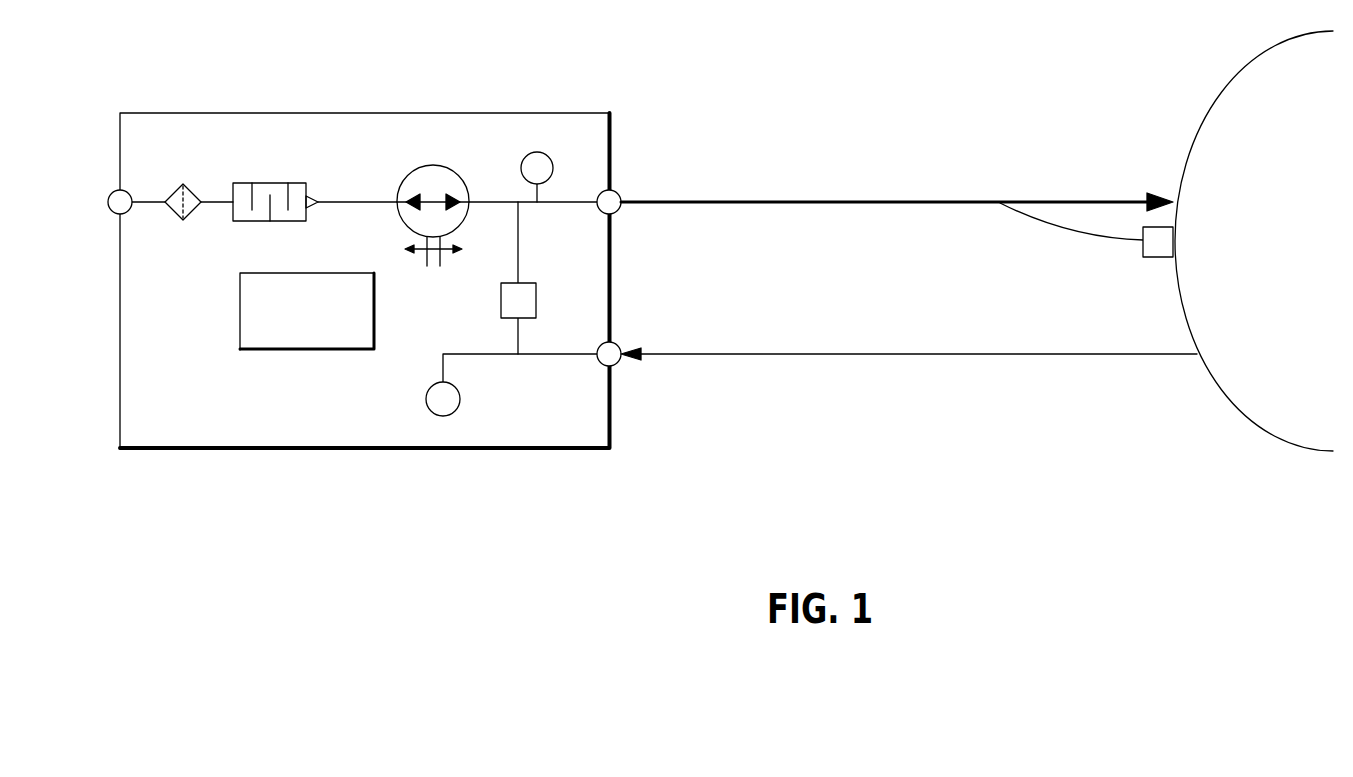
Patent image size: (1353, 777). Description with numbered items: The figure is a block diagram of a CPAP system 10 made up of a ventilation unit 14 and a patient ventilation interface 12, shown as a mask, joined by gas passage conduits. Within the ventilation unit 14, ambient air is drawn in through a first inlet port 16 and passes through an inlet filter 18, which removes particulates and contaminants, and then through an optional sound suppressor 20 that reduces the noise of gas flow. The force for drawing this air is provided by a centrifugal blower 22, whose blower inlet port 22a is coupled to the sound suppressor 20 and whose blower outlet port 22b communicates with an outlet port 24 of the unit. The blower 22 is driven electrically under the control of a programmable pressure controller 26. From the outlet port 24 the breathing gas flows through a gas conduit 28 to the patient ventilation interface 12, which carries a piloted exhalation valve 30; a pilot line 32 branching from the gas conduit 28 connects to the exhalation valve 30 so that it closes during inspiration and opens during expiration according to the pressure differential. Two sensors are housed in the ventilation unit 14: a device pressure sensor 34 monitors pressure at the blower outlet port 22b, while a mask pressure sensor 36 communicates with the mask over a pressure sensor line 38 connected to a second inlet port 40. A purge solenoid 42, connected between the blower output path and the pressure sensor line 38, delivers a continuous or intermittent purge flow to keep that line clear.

The CPAP system 10 is at (801, 491).
The patient ventilation interface 12 is at (1290, 270).
The ventilation unit 14 is at (381, 452).
The first inlet port 16 is at (112, 213).
The inlet filter 18 is at (183, 221).
The sound suppressor 20 is at (263, 222).
The blower 22 is at (405, 182).
The blower inlet port 22a is at (399, 205).
The blower outlet port 22b is at (500, 178).
The outlet port 24 is at (619, 193).
The programmable pressure controller 26 is at (240, 303).
The gas conduit 28 is at (839, 197).
The piloted exhalation valve 30 is at (1173, 243).
The pilot line 32 is at (1073, 231).
The device pressure sensor 34 is at (554, 168).
The mask pressure sensor 36 is at (461, 400).
The pressure sensor line 38 is at (810, 352).
The second inlet port 40 is at (619, 345).
The purge solenoid 42 is at (537, 300).